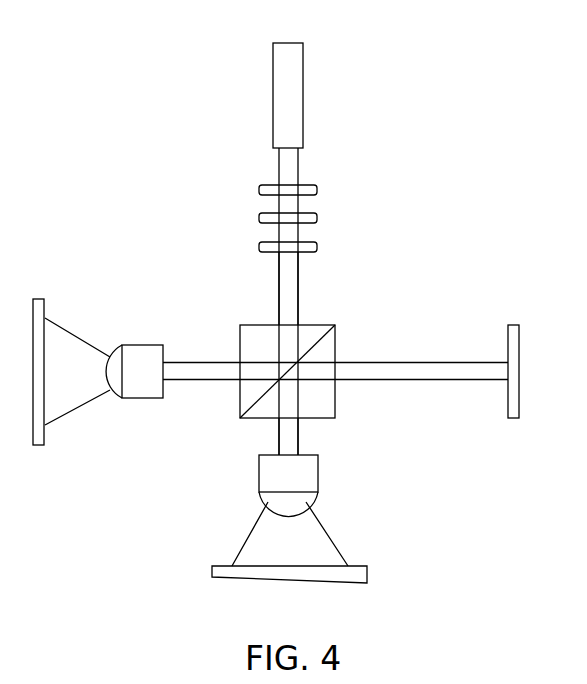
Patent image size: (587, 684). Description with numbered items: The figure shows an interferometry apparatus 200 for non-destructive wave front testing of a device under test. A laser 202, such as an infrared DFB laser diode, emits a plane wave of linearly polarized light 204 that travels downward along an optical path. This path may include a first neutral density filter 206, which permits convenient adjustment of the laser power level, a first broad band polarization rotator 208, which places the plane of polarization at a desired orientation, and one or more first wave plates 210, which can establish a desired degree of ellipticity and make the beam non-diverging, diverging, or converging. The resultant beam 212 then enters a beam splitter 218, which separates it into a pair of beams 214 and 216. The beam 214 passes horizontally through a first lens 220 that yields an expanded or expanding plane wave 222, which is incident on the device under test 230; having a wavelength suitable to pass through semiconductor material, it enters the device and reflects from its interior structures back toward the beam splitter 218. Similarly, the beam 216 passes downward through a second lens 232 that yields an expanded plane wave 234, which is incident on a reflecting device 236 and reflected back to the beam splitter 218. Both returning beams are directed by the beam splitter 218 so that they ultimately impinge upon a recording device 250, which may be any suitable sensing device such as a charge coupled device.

The interferometry apparatus 200 is at (501, 98).
The laser 202 is at (290, 43).
The plane wave of linearly polarized light 204 is at (288, 169).
The first neutral density filter 206 is at (317, 191).
The first broad band polarization rotator 208 is at (317, 219).
The first wave plates 210 is at (317, 248).
The resultant beam 212 is at (288, 271).
The beam 214 is at (210, 362).
The beam 216 is at (290, 439).
The beam splitter 218 is at (316, 325).
The first lens 220 is at (140, 345).
The plane wave 222 is at (82, 350).
The device under test 230 is at (37, 299).
The second lens 232 is at (320, 473).
The plane wave 234 is at (307, 529).
The reflecting device 236 is at (367, 570).
The recording device 250 is at (513, 325).